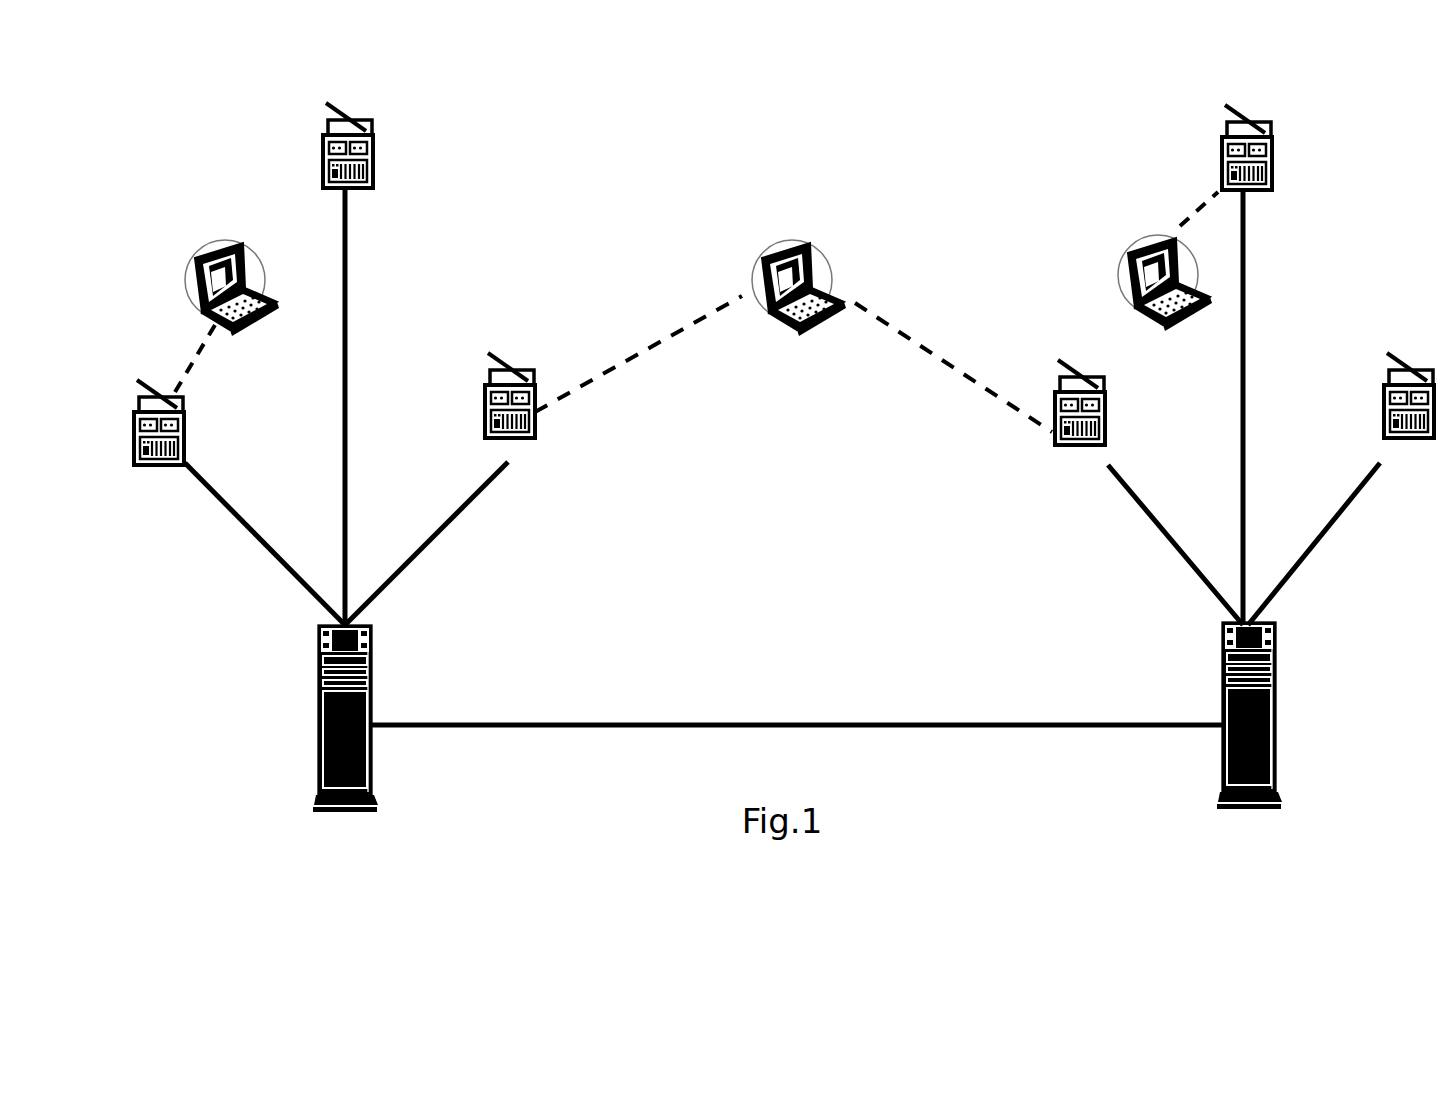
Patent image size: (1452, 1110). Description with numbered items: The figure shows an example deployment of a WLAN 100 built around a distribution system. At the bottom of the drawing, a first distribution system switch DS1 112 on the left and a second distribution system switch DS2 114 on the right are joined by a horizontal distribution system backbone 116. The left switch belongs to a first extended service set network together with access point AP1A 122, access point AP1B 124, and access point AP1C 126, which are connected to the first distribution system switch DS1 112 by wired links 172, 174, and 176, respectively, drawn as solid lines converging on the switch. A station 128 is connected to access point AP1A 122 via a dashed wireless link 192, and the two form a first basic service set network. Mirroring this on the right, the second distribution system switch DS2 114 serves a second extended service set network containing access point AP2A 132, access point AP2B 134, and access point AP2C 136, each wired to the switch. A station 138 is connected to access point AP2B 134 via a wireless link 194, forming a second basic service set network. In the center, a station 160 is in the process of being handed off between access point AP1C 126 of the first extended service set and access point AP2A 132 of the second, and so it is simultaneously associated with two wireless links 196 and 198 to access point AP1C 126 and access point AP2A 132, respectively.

The WLAN 100 is at (789, 64).
The first distribution system switch DS1 112 is at (347, 755).
The second distribution system switch DS2 114 is at (1246, 753).
The distribution system backbone 116 is at (797, 701).
The access point AP1A 122 is at (182, 445).
The access point AP1B 124 is at (356, 168).
The access point AP1C 126 is at (517, 417).
The station 128 is at (232, 308).
The access point AP2A 132 is at (1083, 424).
The access point AP2B 134 is at (1256, 169).
The access point AP2C 136 is at (1407, 419).
The station 138 is at (1165, 298).
The station 160 is at (799, 311).
The wired link 172 is at (265, 544).
The wired link 174 is at (367, 407).
The wired link 176 is at (426, 543).
The wireless link 192 is at (183, 358).
The wireless link 194 is at (1185, 208).
The wireless link 196 is at (638, 354).
The wireless link 198 is at (953, 367).